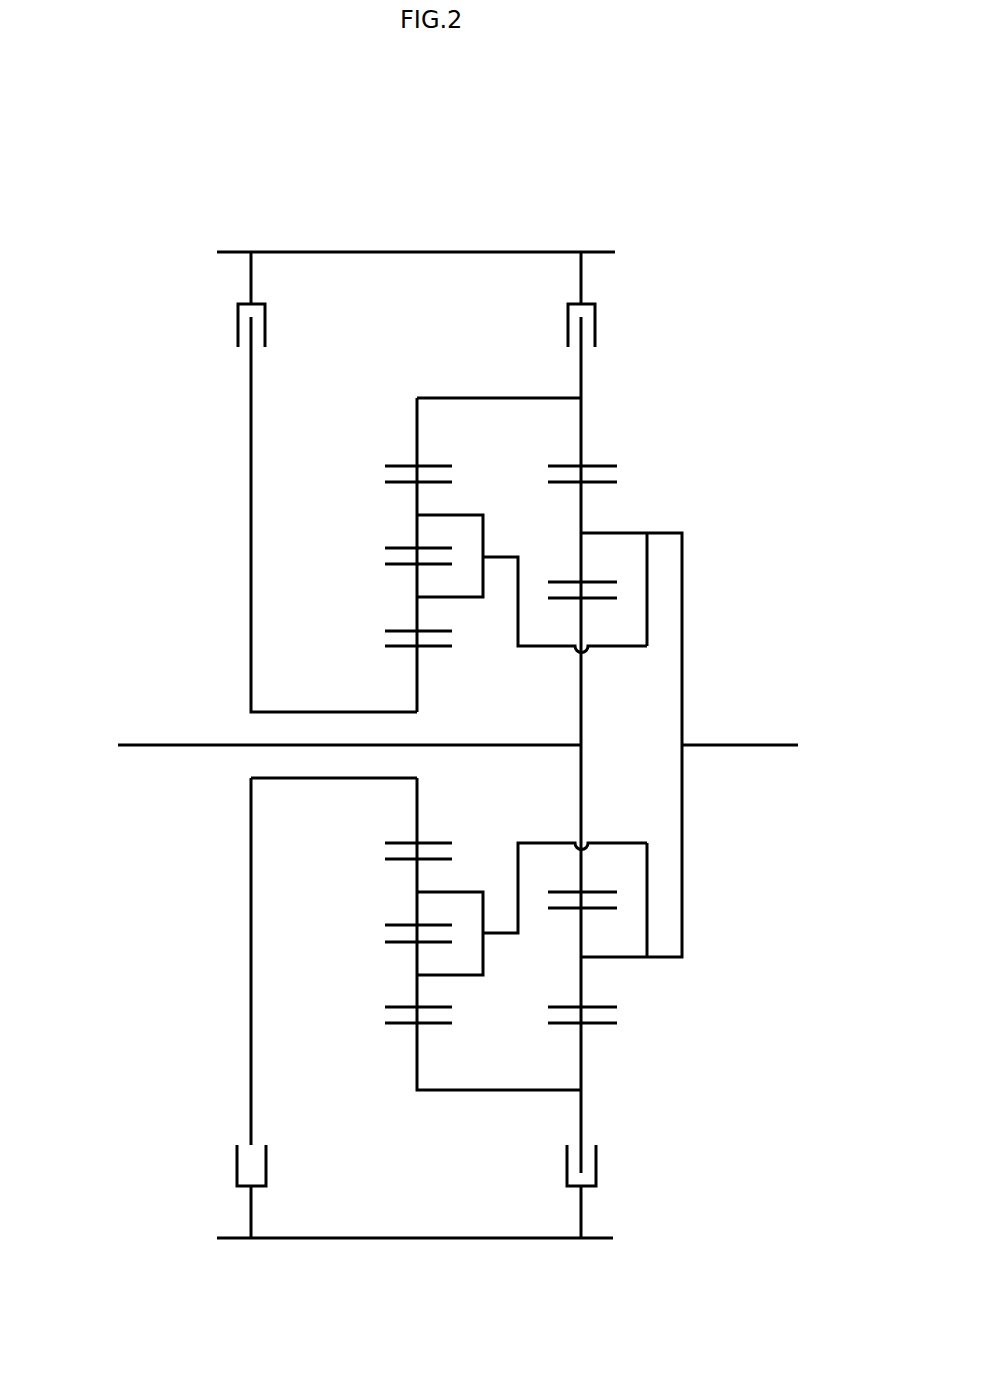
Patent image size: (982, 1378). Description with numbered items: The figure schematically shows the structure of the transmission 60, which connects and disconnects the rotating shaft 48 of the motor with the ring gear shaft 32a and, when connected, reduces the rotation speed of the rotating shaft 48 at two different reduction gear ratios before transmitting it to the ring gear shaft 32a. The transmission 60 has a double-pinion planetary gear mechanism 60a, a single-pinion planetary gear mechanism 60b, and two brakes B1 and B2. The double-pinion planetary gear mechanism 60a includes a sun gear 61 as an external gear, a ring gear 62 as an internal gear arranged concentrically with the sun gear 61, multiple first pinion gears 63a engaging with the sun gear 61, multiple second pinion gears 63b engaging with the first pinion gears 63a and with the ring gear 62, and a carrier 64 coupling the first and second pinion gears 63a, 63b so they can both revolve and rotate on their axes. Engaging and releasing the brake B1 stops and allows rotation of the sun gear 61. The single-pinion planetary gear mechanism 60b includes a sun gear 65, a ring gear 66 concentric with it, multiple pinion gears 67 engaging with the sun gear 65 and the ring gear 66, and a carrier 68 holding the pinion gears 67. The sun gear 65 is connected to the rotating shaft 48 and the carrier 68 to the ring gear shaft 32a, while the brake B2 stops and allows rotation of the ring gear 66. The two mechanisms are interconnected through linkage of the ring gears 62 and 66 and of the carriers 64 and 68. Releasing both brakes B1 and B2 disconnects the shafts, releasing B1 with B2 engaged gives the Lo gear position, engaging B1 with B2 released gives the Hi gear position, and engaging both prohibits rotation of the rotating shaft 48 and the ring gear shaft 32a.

The transmission 60 is at (483, 193).
The double-pinion planetary gear mechanism 60a is at (386, 386).
The single-pinion planetary gear mechanism 60b is at (730, 440).
The brake B1 is at (238, 308).
The brake B2 is at (595, 322).
The sun gear 61 is at (417, 685).
The ring gear 62 is at (417, 442).
The first pinion gear 63a is at (417, 585).
The second pinion gear 63b is at (417, 506).
The carrier 64 is at (467, 515).
The sun gear 65 is at (581, 697).
The ring gear 66 is at (582, 438).
The pinion gear 67 is at (582, 517).
The carrier 68 is at (682, 567).
The rotating shaft 48 is at (185, 745).
The ring gear shaft 32a is at (720, 745).